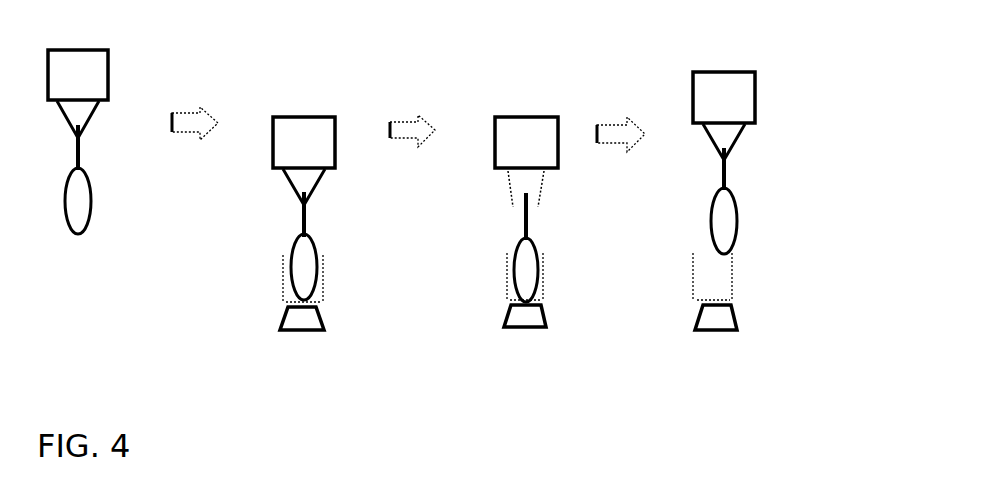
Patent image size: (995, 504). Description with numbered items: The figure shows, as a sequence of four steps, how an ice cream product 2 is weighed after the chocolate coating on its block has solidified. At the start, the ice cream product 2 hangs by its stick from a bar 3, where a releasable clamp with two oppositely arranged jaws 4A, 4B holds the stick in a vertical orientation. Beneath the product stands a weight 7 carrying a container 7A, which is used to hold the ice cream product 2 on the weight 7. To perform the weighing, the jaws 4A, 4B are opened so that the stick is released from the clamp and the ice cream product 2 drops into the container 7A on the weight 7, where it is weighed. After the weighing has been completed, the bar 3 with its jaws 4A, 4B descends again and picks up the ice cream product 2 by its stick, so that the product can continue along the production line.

The ice cream product 2 is at (96, 231).
The bar 3 is at (527, 132).
The jaw 4A is at (508, 192).
The jaw 4B is at (542, 195).
The weight 7 is at (290, 348).
The container 7A is at (273, 282).